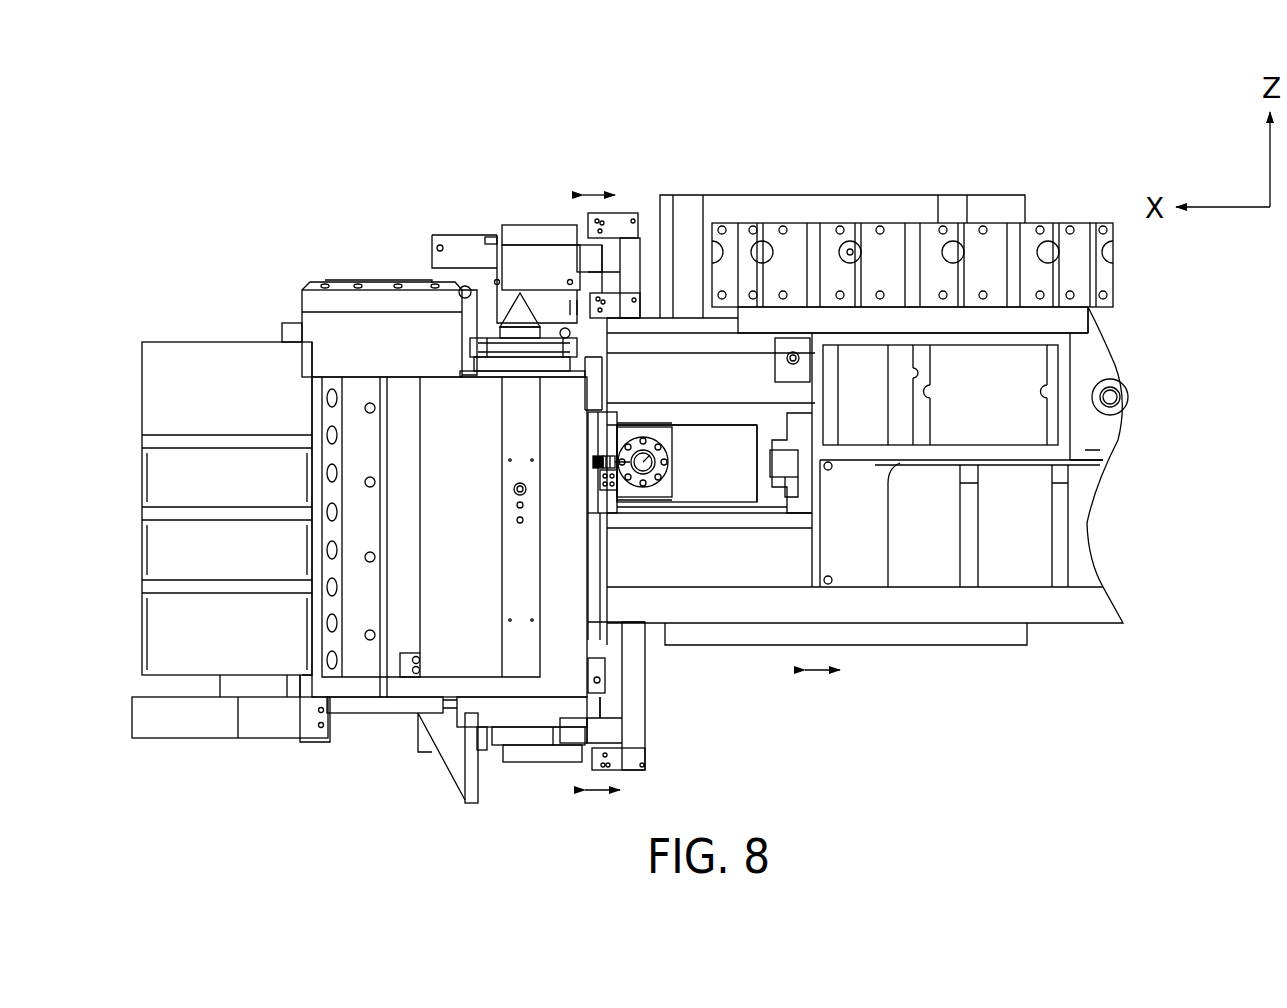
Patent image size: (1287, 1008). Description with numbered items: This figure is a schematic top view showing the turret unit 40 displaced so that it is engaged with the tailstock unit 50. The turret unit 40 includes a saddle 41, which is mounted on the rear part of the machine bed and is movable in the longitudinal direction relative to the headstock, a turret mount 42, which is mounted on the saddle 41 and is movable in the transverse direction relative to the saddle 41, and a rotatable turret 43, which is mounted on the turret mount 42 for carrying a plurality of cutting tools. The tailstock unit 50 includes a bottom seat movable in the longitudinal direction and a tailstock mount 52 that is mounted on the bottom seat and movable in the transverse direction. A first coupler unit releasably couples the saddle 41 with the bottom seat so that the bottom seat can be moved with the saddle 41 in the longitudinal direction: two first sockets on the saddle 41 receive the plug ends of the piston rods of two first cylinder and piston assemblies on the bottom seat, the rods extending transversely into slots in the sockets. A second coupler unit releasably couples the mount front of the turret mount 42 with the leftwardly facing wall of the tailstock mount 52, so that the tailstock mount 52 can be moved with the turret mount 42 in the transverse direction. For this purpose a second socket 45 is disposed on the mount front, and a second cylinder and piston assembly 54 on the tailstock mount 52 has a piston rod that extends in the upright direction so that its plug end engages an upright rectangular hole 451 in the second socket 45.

The turret unit 40 is at (975, 658).
The saddle 41 is at (731, 603).
The turret mount 42 is at (1083, 477).
The rotatable turret 43 is at (1103, 280).
The second socket 45 is at (788, 480).
The upright rectangular hole 451 is at (792, 462).
The tailstock unit 50 is at (237, 300).
The tailstock mount 52 is at (172, 363).
The second cylinder and piston assembly 54 is at (648, 445).